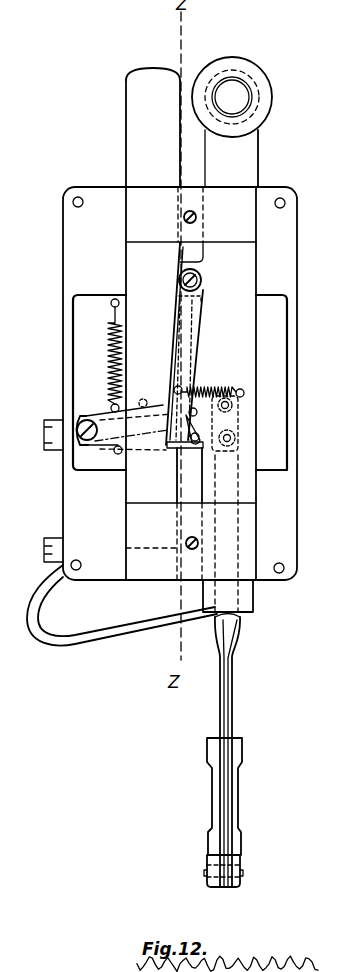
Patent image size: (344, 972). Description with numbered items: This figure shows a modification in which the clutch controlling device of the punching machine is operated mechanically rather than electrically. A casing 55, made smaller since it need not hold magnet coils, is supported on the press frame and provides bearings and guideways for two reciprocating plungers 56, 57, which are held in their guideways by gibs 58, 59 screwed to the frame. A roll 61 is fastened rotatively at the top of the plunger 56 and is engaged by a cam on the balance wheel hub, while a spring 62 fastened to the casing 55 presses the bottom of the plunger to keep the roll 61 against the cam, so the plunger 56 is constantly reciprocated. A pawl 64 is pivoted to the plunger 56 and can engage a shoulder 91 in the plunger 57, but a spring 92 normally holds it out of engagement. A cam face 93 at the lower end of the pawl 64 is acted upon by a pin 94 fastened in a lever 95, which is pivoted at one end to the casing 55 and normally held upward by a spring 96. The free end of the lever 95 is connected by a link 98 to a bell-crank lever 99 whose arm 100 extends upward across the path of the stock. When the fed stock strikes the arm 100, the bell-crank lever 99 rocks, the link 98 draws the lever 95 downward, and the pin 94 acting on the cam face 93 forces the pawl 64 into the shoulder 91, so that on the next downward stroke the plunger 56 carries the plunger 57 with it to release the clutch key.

The casing 55 is at (70, 280).
The plunger 56 is at (254, 382).
The plunger 57 is at (114, 382).
The gib 58 is at (190, 214).
The gib 59 is at (189, 533).
The roll 61 is at (267, 83).
The spring 62 is at (36, 611).
The pawl 64 is at (184, 372).
The shoulder 91 is at (168, 448).
The spring 92 is at (233, 394).
The cam face 93 is at (193, 444).
The pin 94 is at (200, 438).
The lever 95 is at (120, 426).
The spring 96 is at (112, 337).
The link 98 is at (226, 678).
The bell-crank lever 99 is at (207, 853).
The arm 100 is at (240, 755).